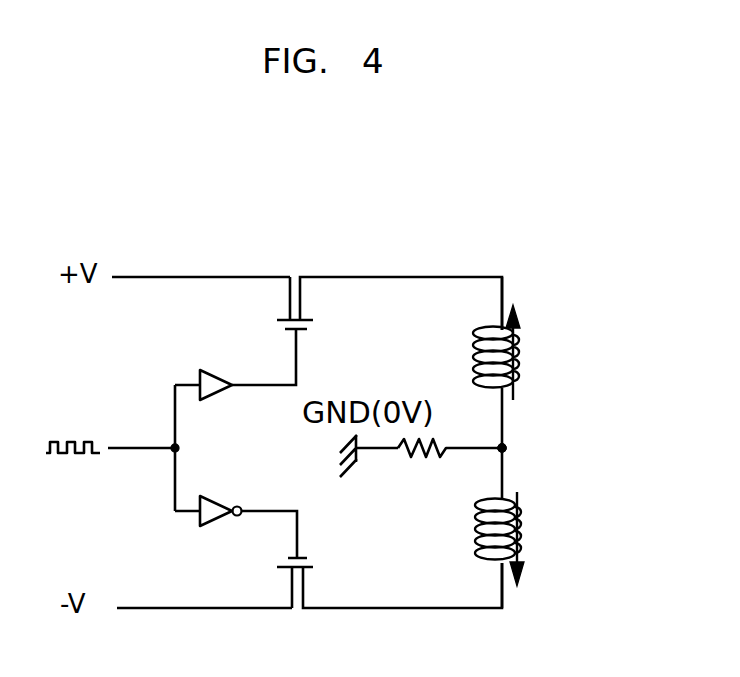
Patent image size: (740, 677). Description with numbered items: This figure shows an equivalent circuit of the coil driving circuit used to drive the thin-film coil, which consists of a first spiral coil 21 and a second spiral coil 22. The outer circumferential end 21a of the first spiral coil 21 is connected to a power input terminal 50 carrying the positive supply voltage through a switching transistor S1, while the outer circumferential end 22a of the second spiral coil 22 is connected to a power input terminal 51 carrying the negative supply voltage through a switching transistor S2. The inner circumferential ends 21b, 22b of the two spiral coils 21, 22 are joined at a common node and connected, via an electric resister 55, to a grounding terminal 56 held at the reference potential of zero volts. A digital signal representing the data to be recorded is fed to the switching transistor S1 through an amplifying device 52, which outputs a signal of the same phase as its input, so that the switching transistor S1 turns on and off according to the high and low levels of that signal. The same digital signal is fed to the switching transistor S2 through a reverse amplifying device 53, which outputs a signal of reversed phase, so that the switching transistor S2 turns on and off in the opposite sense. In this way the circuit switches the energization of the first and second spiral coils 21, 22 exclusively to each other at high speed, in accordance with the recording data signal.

The power input terminal 50 is at (155, 275).
The power input terminal 51 is at (146, 606).
The amplifying device 52 is at (214, 369).
The reverse amplifying device 53 is at (213, 494).
The electric resister 55 is at (410, 460).
The grounding terminal 56 is at (365, 455).
The switching transistor S1 is at (313, 316).
The switching transistor S2 is at (315, 566).
The first spiral coil 21 is at (548, 365).
The second spiral coil 22 is at (548, 542).
The outer circumferential end 21a is at (502, 282).
The inner circumferential end 21b is at (503, 446).
The inner circumferential end 22b is at (502, 448).
The outer circumferential end 22a is at (503, 608).